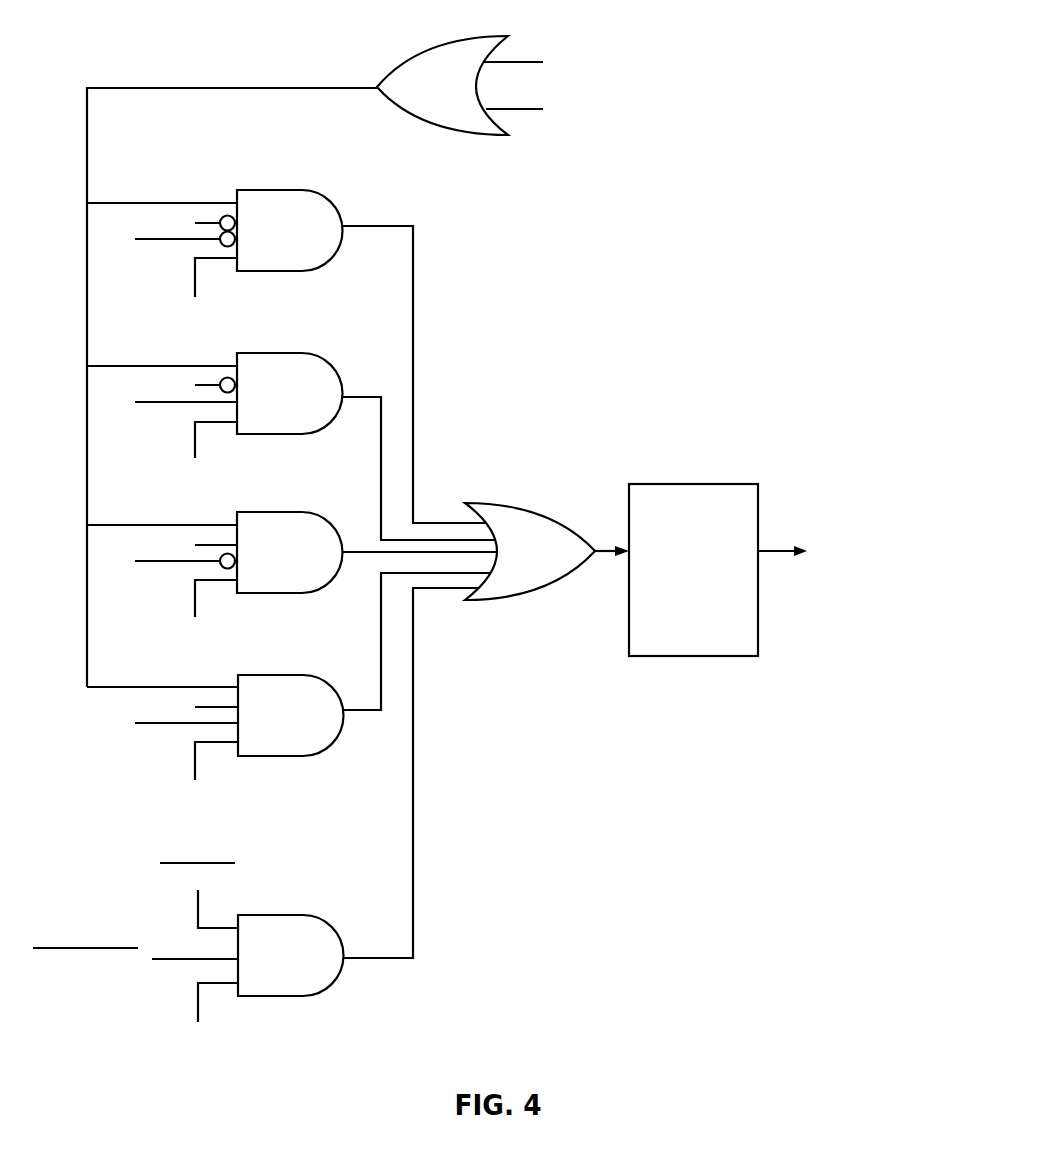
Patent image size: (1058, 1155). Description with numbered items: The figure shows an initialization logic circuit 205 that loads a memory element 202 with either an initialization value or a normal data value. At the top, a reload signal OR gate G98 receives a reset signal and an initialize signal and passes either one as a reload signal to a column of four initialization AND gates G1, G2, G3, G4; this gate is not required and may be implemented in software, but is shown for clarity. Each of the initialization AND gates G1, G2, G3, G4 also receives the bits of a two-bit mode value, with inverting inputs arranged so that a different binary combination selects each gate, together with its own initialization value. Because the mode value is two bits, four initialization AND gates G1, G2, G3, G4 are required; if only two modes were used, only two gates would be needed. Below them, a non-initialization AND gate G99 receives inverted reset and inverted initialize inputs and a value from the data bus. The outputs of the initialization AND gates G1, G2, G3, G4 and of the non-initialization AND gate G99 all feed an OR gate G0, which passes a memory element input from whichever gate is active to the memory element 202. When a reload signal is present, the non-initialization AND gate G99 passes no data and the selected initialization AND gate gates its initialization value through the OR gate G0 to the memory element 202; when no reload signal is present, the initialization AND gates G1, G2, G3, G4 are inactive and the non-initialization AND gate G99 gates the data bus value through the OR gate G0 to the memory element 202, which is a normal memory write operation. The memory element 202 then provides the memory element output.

The memory element 202 is at (695, 484).
The initialization logic circuit 205 is at (413, 552).
The OR gate G0 is at (547, 551).
The initialization AND gate G1 is at (286, 356).
The initialization AND gate G2 is at (291, 446).
The initialization AND gate G3 is at (292, 581).
The initialization AND gate G4 is at (289, 692).
The reload signal OR gate G98 is at (520, 85).
The non-initialization AND gate G99 is at (255, 832).